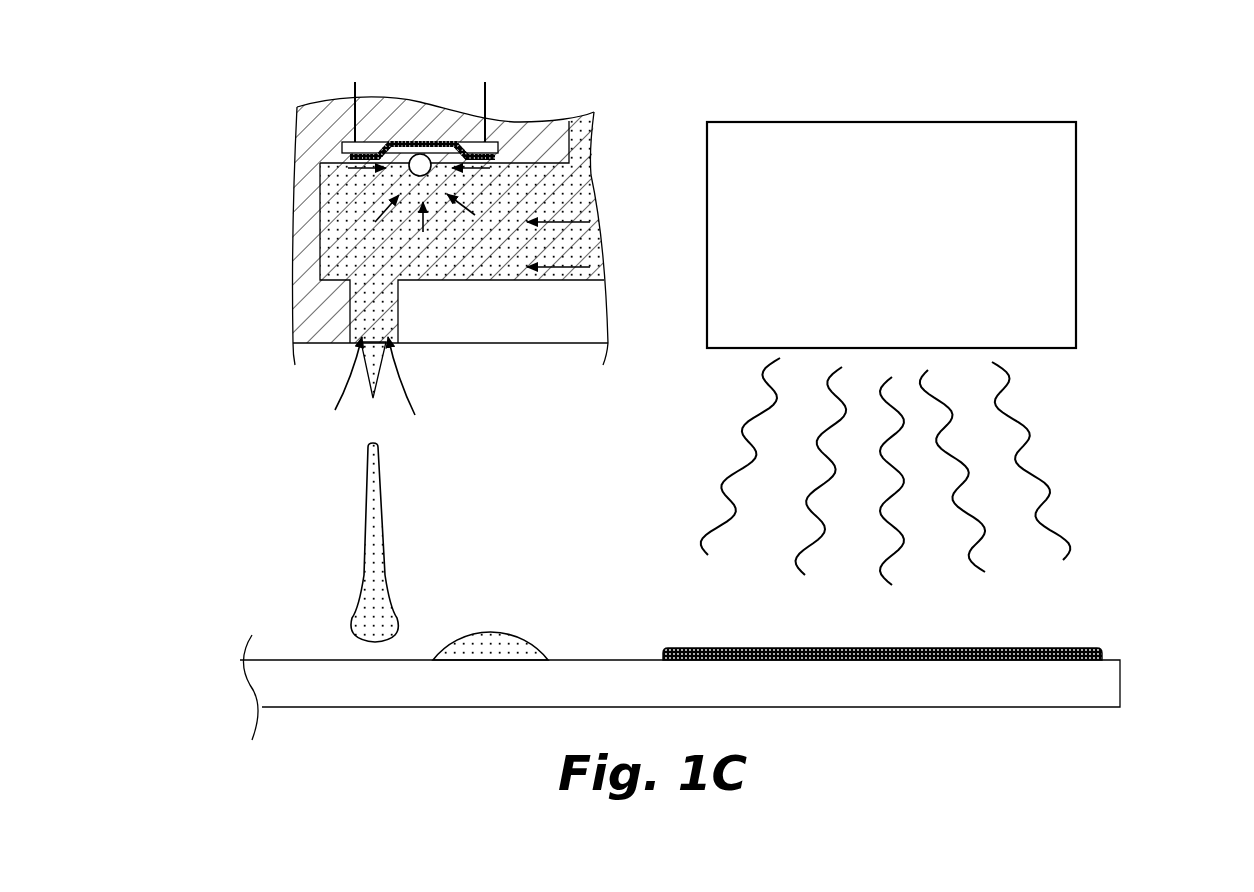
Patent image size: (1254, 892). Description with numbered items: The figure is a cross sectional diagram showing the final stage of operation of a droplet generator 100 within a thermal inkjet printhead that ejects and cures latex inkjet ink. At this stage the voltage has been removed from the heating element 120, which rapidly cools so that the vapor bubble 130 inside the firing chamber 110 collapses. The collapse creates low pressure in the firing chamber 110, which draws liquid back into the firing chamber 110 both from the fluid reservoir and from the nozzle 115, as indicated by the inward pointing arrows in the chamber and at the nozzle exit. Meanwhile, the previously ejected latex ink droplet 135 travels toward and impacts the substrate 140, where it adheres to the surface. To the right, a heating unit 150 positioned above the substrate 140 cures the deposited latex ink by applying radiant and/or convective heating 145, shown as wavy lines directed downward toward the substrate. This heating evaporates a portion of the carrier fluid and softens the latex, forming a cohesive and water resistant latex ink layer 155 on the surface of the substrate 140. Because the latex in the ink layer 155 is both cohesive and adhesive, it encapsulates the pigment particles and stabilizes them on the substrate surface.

The droplet generator 100 is at (246, 125).
The firing chamber 110 is at (338, 233).
The nozzle 115 is at (383, 297).
The heating element 120 is at (487, 161).
The vapor bubble 130 is at (416, 167).
The latex ink droplet 135 is at (352, 623).
The substrate 140 is at (604, 695).
The radiant and/or convective heating 145 is at (1122, 365).
The heating unit 150 is at (924, 250).
The latex ink layer 155 is at (1073, 648).